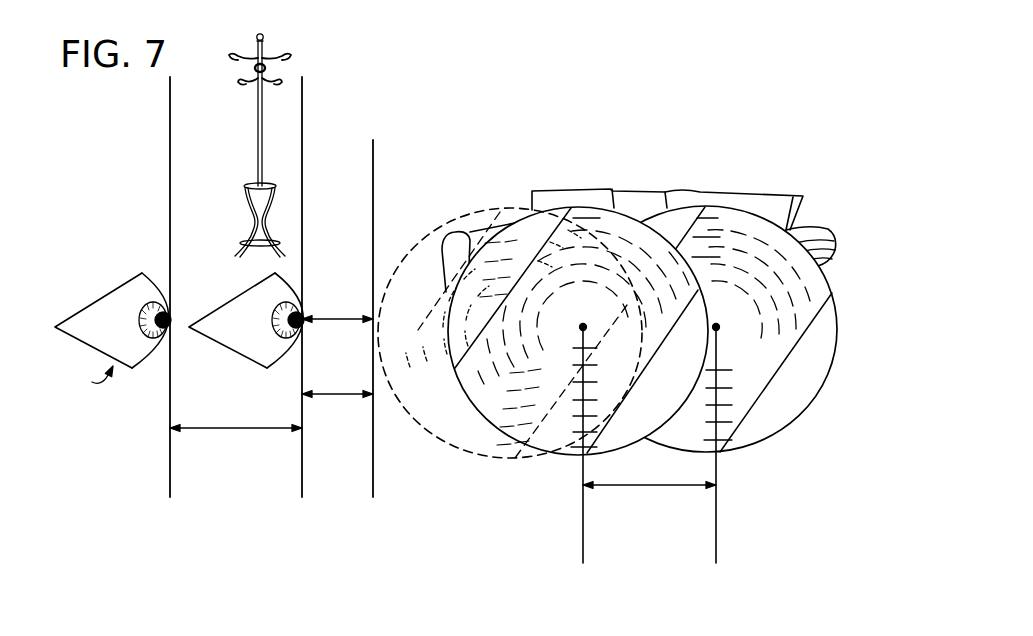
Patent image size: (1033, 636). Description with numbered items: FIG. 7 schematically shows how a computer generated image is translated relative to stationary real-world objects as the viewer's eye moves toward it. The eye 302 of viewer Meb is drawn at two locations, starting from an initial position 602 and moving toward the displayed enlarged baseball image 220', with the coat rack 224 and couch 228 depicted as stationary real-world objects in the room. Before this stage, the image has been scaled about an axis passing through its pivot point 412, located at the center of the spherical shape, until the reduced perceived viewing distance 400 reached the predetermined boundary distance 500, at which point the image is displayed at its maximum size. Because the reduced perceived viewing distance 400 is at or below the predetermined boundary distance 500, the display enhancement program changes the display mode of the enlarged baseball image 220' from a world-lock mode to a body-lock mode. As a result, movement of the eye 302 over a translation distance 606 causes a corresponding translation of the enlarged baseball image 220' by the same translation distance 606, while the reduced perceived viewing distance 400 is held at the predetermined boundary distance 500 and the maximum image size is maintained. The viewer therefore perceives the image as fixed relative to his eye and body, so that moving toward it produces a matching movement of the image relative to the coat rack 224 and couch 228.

The coat rack 224 is at (257, 109).
The eye 302 is at (105, 295).
The initial position 602 is at (89, 379).
The reduced perceived viewing distance 400 is at (338, 321).
The predetermined boundary distance 500 is at (341, 396).
The translation distance 606 is at (207, 430).
The couch 228 is at (668, 202).
The enlarged baseball image 220' is at (642, 298).
The pivot point 412 is at (583, 330).